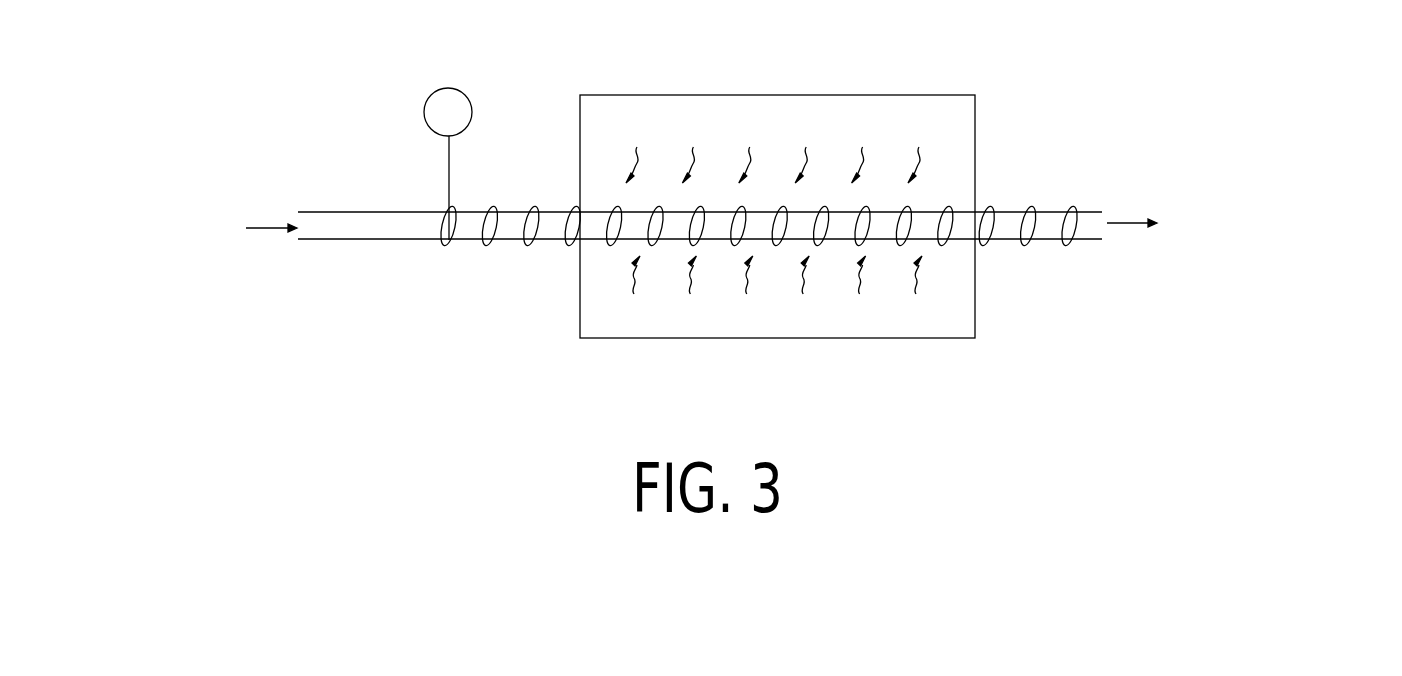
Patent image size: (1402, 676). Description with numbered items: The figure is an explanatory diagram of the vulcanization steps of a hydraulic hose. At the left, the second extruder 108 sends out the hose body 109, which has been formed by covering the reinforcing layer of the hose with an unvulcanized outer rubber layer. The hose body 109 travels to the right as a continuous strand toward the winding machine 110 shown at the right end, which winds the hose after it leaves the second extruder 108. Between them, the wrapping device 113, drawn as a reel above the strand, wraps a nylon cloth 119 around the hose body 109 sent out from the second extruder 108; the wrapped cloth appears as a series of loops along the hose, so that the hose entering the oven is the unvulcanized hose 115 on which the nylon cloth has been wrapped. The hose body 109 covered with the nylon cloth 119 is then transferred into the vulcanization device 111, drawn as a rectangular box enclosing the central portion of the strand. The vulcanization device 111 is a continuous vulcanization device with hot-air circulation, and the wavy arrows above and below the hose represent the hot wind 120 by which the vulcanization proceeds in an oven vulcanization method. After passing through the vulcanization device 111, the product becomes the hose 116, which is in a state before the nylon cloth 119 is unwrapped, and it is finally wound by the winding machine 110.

The second extruder 108 is at (177, 216).
The hose body 109 is at (352, 212).
The winding machine 110 is at (1217, 208).
The vulcanization device 111 is at (923, 95).
The wrapping device 113 is at (448, 88).
The unvulcanized hose 115 is at (505, 212).
The hose 116 is at (1056, 212).
The nylon cloth 119 is at (1036, 240).
The hot wind 120 is at (921, 149).